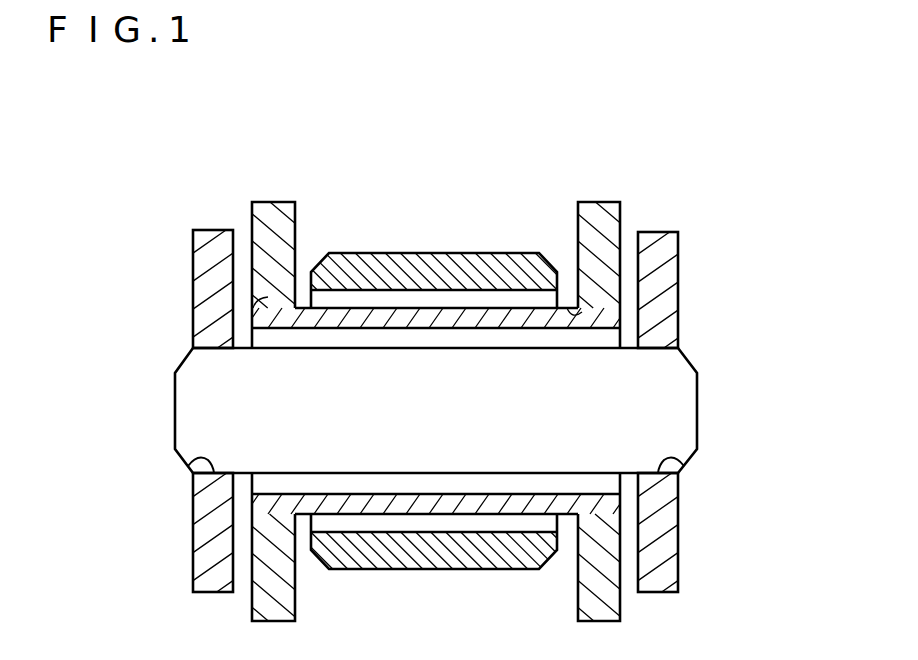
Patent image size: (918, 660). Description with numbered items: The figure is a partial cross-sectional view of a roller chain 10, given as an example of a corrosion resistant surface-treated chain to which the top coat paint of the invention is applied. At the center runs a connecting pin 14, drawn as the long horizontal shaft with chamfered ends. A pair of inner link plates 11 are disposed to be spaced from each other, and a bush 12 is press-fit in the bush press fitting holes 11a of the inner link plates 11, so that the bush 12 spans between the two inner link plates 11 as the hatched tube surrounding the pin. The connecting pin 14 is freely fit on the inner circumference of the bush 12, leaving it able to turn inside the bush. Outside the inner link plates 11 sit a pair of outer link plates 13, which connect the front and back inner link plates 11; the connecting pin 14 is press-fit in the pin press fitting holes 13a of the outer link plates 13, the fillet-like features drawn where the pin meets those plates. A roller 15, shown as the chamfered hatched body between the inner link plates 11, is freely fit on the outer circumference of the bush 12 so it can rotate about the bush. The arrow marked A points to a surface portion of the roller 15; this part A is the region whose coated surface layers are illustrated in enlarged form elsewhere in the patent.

The roller chain 10 is at (703, 513).
The inner link plates 11 is at (283, 210).
The bush press fitting holes 11a is at (250, 299).
The bush 12 is at (617, 322).
The outer link plates 13 is at (207, 247).
The pin press fitting holes 13a is at (190, 460).
The connecting pin 14 is at (678, 412).
The roller 15 is at (408, 252).
The part A is at (477, 246).